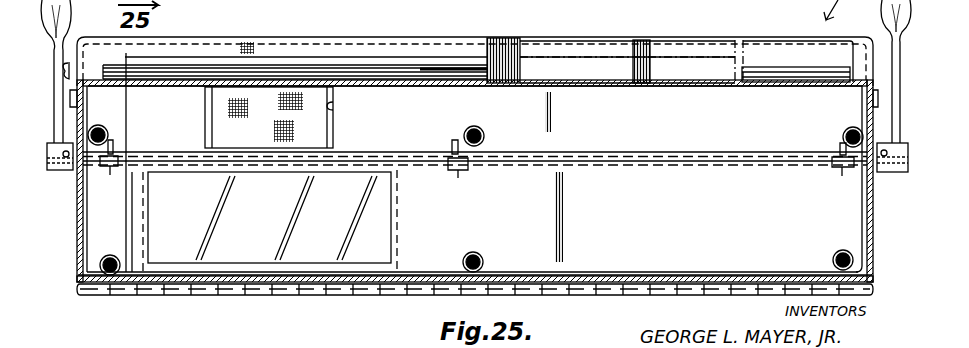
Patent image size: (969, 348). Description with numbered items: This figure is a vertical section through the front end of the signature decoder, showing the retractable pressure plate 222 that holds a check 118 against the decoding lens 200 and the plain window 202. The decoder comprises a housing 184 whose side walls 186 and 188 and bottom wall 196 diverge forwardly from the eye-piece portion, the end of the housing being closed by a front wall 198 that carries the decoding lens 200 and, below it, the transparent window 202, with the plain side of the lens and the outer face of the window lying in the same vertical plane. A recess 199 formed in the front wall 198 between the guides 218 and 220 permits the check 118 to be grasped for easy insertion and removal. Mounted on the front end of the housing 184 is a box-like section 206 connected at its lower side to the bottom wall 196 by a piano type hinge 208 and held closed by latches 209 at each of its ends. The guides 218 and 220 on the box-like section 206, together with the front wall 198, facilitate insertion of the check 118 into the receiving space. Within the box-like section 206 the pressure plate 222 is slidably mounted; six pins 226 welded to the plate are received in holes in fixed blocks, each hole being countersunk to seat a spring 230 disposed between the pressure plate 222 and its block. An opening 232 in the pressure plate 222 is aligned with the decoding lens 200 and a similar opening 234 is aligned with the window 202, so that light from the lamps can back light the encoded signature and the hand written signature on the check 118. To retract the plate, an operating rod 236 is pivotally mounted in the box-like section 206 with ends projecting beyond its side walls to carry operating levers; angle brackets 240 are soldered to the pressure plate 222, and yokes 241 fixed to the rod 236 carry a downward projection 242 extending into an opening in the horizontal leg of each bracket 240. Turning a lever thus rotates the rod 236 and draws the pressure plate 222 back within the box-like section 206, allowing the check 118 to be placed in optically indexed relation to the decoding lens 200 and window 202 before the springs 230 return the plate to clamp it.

The check 118 is at (577, 60).
The housing 184 is at (75, 292).
The side wall 186 is at (78, 232).
The side wall 188 is at (872, 232).
The bottom wall 196 is at (172, 268).
The front wall 198 is at (426, 48).
The recess 199 is at (700, 46).
The decoding lens 200 is at (286, 52).
The window 202 is at (392, 192).
The box-like section 206 is at (437, 87).
The piano type hinge 208 is at (292, 290).
The latch 209 is at (77, 79).
The guide 218 is at (190, 70).
The guide 220 is at (774, 68).
The pressure plate 222 is at (685, 219).
The pin 226 is at (106, 133).
The spring 230 is at (98, 128).
The opening 232 is at (334, 104).
The opening 234 is at (396, 218).
The operating rod 236 is at (556, 154).
The angle bracket 240 is at (100, 172).
The yoke 241 is at (118, 150).
The downward projection 242 is at (118, 174).